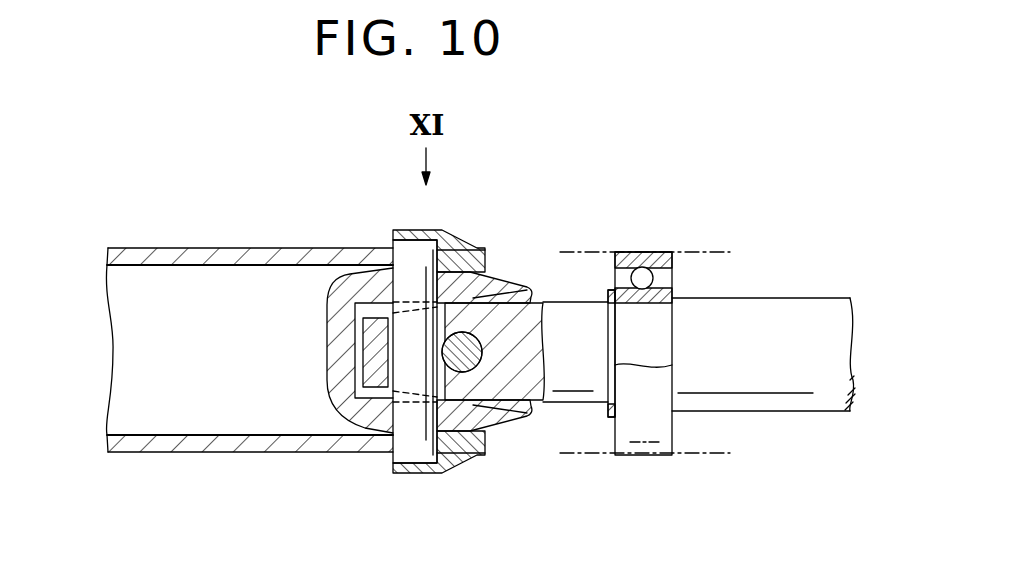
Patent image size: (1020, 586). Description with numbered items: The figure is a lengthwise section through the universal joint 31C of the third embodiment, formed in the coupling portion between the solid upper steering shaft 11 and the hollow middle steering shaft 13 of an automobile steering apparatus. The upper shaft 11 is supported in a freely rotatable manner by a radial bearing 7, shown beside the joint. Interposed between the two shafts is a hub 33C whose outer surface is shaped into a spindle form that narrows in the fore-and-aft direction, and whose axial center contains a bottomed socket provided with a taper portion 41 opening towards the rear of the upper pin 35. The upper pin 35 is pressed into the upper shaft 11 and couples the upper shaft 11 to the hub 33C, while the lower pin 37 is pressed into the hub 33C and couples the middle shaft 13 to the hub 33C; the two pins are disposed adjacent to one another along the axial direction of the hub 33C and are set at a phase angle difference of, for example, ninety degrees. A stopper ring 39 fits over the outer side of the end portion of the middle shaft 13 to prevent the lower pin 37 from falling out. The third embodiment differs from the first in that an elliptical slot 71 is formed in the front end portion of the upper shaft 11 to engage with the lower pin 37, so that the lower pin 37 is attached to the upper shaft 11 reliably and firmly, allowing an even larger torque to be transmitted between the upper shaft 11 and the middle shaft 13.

The middle steering shaft 13 is at (183, 252).
The lower pin 37 is at (410, 254).
The stopper ring 39 is at (413, 474).
The upper pin 35 is at (507, 424).
The taper portion 41 is at (537, 293).
The hub 33C is at (318, 393).
The elliptical slot 71 is at (383, 408).
The upper steering shaft 11 is at (775, 302).
The radial bearing 7 is at (647, 448).
The universal joint 31C is at (541, 247).